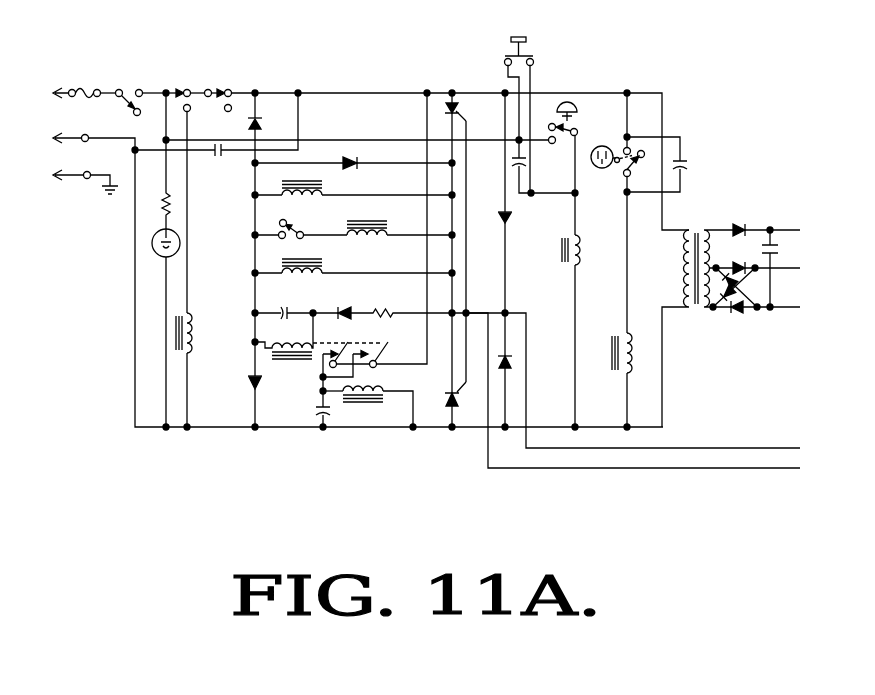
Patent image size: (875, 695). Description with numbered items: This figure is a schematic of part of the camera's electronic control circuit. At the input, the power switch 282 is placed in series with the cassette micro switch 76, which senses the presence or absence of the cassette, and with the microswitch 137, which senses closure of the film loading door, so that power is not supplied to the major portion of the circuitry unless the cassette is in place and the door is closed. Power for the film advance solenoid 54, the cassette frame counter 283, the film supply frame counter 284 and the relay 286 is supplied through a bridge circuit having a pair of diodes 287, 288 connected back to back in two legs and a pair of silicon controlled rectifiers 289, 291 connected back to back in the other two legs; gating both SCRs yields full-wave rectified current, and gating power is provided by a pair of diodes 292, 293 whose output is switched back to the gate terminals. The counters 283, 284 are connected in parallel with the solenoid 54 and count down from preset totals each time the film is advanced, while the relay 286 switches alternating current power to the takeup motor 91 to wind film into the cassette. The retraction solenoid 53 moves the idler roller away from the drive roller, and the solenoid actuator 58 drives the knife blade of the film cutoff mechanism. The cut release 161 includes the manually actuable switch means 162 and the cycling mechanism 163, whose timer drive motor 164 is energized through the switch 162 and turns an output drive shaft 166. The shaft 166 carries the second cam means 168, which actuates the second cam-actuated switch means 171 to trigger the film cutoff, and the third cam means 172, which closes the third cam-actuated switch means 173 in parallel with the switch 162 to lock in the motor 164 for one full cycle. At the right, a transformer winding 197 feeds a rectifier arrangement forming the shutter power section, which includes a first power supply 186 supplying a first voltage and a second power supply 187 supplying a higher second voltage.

The power switch 282 is at (130, 88).
The micro switch 76 is at (170, 88).
The microswitch 137 is at (218, 88).
The diode 287 is at (258, 121).
The rotary-motion type solenoid 54 is at (318, 192).
The cassette frame counter 283 is at (383, 232).
The film supply frame counter 284 is at (327, 270).
The linear motion retraction solenoid 53 is at (193, 326).
The diode 288 is at (250, 384).
The relay 286 is at (280, 358).
The takeup motor 91 is at (376, 398).
The cut release 161 is at (501, 64).
The manually actuable switch means 162 is at (532, 50).
The third cam means 172 is at (572, 99).
The third cam-actuated switch means 173 is at (577, 127).
The second cam means 168 is at (603, 169).
The second cam-actuated switch means 171 is at (624, 178).
The output drive shaft 166 is at (615, 220).
The timer drive motor 164 is at (567, 274).
The cycling mechanism 163 is at (574, 284).
The silicon controlled rectifier 289 is at (460, 108).
The diode 292 is at (510, 222).
The diode 293 is at (514, 360).
The silicon controlled rectifier 291 is at (458, 408).
The solenoid actuator 58 is at (626, 342).
The transformer secondary winding 197 is at (714, 244).
The second power supply 187 is at (802, 253).
The first power supply 186 is at (750, 316).